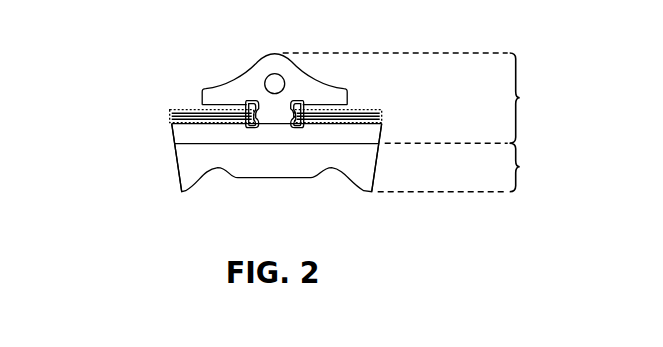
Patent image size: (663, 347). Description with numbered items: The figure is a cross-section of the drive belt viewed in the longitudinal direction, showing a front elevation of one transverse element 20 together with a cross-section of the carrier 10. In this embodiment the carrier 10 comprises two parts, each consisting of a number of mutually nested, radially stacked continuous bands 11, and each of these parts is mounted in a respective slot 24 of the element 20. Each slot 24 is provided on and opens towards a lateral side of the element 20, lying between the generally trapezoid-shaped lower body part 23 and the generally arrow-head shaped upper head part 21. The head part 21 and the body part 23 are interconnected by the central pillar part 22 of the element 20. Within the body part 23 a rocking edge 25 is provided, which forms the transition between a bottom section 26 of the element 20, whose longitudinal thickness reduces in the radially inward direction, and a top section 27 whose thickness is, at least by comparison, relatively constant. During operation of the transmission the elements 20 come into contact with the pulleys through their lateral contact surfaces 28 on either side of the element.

The carrier 10 is at (171, 99).
The continuous bands 11 is at (175, 118).
The transverse element 20 is at (317, 66).
The head part 21 is at (248, 87).
The central pillar part 22 is at (265, 124).
The body part 23 is at (290, 155).
The slot 24 is at (215, 107).
The rocking edge 25 is at (227, 144).
The bottom section 26 is at (464, 167).
The top section 27 is at (467, 98).
The lateral contact surfaces 28 is at (172, 162).